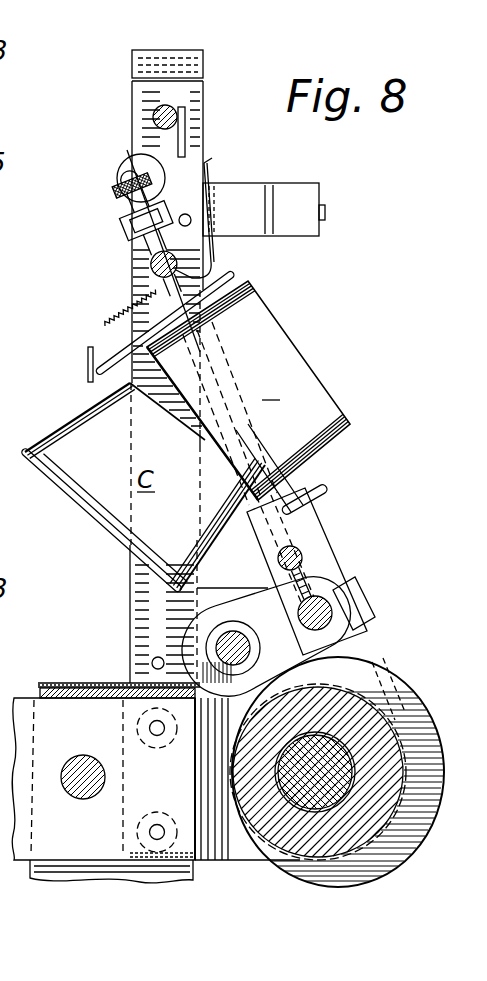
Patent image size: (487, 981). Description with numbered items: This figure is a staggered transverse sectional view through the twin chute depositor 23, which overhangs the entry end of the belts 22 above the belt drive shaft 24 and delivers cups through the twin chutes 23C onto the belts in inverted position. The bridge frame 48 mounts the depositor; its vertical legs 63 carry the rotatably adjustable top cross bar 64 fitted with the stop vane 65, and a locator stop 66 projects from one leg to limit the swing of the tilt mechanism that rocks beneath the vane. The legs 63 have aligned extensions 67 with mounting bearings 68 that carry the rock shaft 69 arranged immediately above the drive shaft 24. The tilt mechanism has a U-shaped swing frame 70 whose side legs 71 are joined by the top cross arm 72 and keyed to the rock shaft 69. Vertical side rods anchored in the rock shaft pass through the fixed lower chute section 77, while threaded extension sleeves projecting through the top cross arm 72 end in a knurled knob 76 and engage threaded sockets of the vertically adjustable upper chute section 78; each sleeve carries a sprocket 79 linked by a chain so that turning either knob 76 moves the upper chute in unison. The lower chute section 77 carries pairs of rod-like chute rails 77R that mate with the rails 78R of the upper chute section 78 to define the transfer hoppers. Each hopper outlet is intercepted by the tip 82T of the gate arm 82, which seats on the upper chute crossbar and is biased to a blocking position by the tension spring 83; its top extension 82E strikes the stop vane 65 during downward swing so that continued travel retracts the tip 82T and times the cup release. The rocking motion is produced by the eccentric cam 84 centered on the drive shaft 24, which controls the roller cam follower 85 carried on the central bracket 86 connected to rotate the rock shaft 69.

The bridge frame 48 is at (164, 50).
The twin chute depositor 23 is at (274, 56).
The top cross bar 64 is at (150, 117).
The stop vane 65 is at (188, 128).
The top cross arm 72 is at (135, 155).
The top extension 82E is at (222, 186).
The locator stop 66 is at (320, 188).
The knurled knob 76 is at (114, 190).
The swing frame 70 is at (112, 222).
The sprocket 79 is at (110, 237).
The vertical legs 63 is at (128, 263).
The upper chute section 78 is at (148, 273).
The tension spring 83 is at (118, 316).
The tip 82T is at (88, 370).
The chute rails 78R is at (103, 493).
The gate arm 82 is at (212, 272).
The twin chutes 23C is at (258, 281).
The chute rails 77R is at (240, 535).
The extensions 67 is at (250, 596).
The side legs 71 is at (322, 546).
The lower chute section 77 is at (302, 558).
The rock shaft 69 is at (350, 628).
The mounting bearings 68 is at (355, 643).
The cam follower 85 is at (190, 637).
The central bracket 86 is at (248, 645).
The belts 22 is at (82, 662).
The eccentric cam 84 is at (433, 727).
The belt drive shaft 24 is at (277, 858).